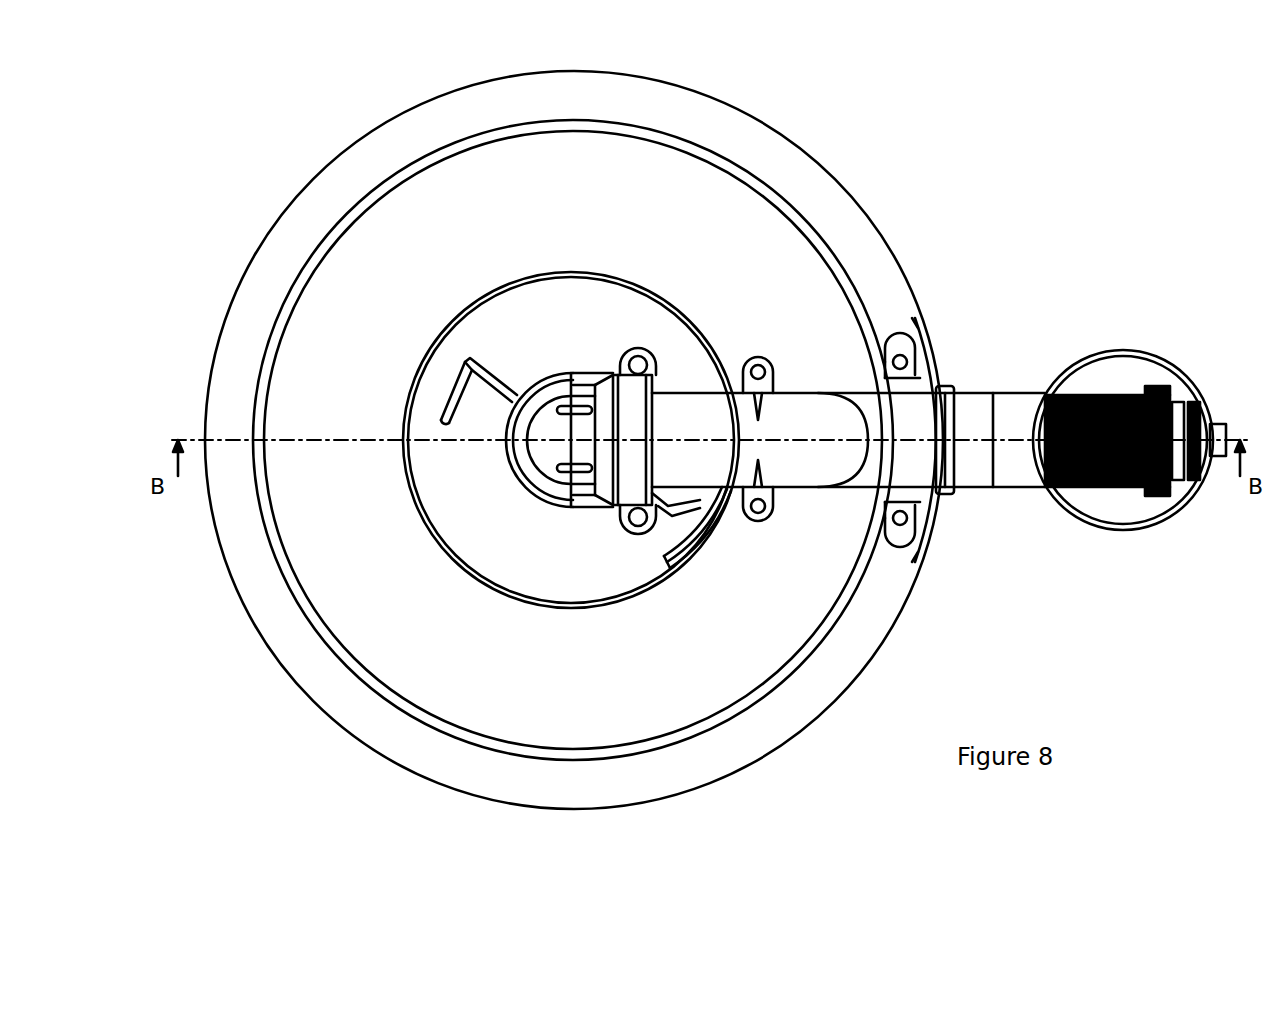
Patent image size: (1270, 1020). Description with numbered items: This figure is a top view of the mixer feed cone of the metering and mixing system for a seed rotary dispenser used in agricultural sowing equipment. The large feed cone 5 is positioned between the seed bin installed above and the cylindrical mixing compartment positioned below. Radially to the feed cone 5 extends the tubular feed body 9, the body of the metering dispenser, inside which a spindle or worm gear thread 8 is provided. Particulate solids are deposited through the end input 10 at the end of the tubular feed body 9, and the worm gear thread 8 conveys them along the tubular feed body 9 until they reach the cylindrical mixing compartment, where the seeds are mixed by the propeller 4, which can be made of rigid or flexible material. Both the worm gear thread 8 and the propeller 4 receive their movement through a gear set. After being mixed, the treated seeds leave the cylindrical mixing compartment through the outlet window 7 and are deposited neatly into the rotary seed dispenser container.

The propeller 4 is at (455, 418).
The feed cone 5 is at (366, 246).
The outlet window 7 is at (708, 540).
The worm gear thread 8 is at (1076, 484).
The feed body 9 is at (971, 400).
The end input 10 is at (1129, 425).